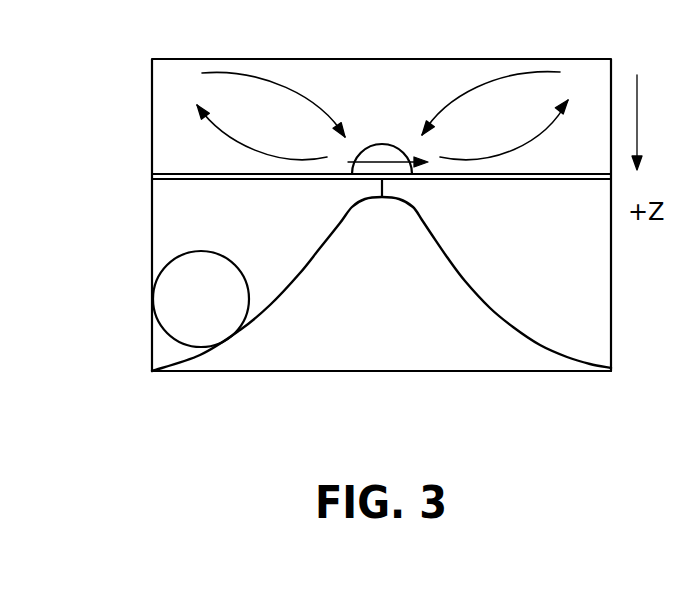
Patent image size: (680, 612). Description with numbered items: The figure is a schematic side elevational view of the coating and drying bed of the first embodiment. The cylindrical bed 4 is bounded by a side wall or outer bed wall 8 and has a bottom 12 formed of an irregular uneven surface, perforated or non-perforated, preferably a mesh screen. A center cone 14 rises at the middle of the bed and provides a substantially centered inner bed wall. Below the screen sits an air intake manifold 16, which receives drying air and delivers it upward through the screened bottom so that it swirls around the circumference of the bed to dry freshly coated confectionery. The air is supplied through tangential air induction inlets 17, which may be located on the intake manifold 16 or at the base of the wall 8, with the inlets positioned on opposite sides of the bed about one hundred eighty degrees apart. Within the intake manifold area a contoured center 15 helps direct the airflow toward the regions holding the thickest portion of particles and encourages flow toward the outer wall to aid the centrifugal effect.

The cylindrical bed 4 is at (125, 93).
The outer bed wall 8 is at (612, 70).
The bottom 12 is at (167, 171).
The center cone 14 is at (382, 150).
The contoured center 15 is at (515, 330).
The air intake manifold 16 is at (157, 338).
The tangential air induction inlets 17 is at (167, 278).